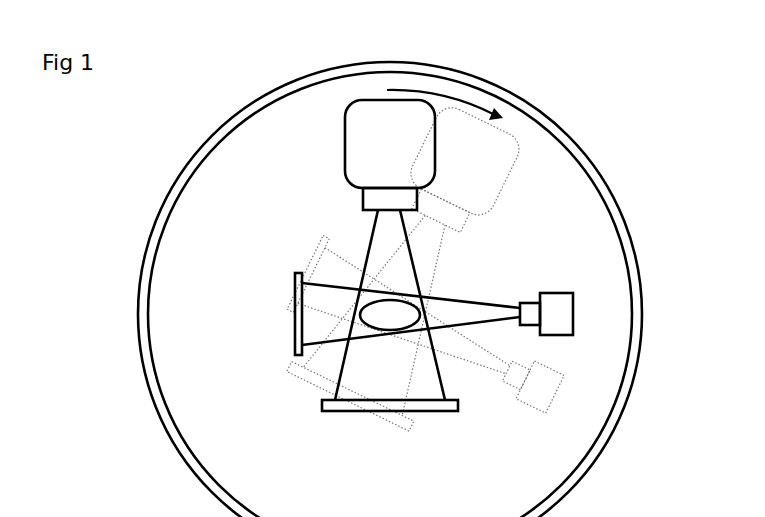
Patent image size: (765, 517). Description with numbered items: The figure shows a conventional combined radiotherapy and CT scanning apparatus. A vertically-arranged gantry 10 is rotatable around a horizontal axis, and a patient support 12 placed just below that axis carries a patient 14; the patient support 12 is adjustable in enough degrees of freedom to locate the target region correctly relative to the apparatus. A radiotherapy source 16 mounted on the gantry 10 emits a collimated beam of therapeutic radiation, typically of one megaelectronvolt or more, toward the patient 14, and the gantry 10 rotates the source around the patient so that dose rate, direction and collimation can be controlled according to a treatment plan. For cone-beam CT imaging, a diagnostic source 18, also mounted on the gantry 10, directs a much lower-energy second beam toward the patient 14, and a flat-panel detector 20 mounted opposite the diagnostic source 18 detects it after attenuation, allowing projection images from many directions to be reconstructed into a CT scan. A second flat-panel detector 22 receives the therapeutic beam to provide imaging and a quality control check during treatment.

The gantry 10 is at (187, 340).
The patient support 12 is at (368, 339).
The patient 14 is at (393, 310).
The radiotherapy source 16 is at (386, 123).
The diagnostic source 18 is at (557, 314).
The flat-panel detector 20 is at (295, 323).
The second flat-panel detector 22 is at (437, 412).